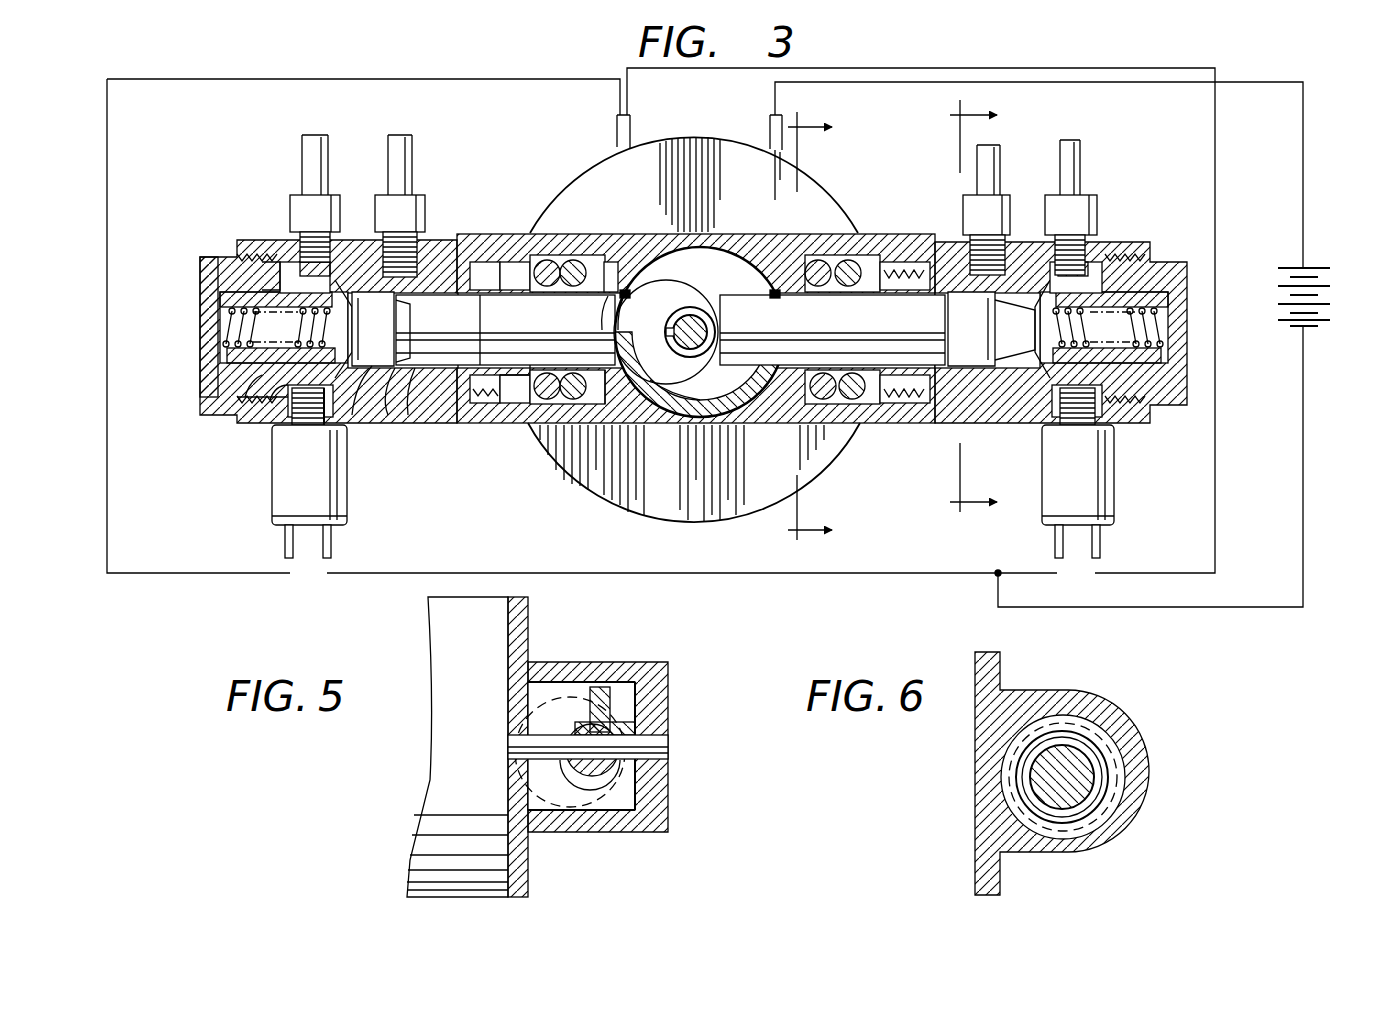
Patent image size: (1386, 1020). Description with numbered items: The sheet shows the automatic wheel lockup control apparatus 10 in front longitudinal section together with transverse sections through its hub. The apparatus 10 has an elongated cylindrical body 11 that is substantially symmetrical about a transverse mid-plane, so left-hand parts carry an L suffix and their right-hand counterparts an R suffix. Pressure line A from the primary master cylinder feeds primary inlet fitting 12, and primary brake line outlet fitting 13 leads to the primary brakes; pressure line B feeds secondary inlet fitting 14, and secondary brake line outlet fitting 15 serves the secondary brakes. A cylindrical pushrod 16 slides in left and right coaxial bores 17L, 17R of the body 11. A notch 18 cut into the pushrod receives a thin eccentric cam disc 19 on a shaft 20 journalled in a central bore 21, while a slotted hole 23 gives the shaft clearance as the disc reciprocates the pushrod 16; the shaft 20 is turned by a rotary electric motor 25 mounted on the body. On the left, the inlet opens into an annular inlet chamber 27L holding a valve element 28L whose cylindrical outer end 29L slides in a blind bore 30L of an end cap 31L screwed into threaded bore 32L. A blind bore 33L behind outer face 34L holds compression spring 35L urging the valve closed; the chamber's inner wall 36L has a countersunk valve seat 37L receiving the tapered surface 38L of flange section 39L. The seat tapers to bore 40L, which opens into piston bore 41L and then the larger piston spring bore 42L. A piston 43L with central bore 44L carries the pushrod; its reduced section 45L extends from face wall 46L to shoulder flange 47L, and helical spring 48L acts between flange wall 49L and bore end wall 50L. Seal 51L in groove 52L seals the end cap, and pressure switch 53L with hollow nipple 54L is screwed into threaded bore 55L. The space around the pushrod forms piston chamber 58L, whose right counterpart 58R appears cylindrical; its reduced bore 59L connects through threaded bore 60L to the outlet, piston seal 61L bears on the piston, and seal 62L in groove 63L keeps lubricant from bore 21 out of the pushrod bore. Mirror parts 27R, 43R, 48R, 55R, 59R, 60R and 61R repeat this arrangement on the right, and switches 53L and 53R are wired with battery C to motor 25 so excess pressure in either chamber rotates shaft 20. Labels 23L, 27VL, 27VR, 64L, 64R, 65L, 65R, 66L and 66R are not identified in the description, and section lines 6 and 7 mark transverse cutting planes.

In FIG. 3, the electrical circuit 10 is at (1214, 66).
In FIG. 3, the battery C is at (1333, 300).
In FIG. 3, the valve body 11 is at (866, 232).
In FIG. 5, the valve body 11 is at (676, 720).
In FIG. 6, the valve body 11 is at (1090, 693).
In FIG. 3, the left inlet solenoid valve 12 is at (316, 193).
In FIG. 3, the left second solenoid valve 13 is at (396, 206).
In FIG. 3, the right inlet solenoid valve 14 is at (1087, 205).
In FIG. 3, the right second solenoid valve 15 is at (976, 193).
In FIG. 3, the shaft 16 is at (772, 292).
In FIG. 5, the shaft 16 is at (573, 735).
In FIG. 6, the shaft 16 is at (1090, 760).
In FIG. 3, the left hub bore 17L is at (624, 292).
In FIG. 3, the right hub bore 17R is at (792, 272).
In FIG. 3, the hub lower wall 18 is at (738, 416).
In FIG. 3, the key 19 is at (645, 412).
In FIG. 5, the key 19 is at (608, 700).
In FIG. 3, the ball 20 is at (694, 320).
In FIG. 5, the ball 20 is at (590, 777).
In FIG. 3, the hub 21 is at (700, 318).
In FIG. 5, the hub 21 is at (665, 782).
In FIG. 5, the shaft pin 23 is at (592, 762).
In FIG. 3, the shaft pin 23L is at (676, 324).
In FIG. 3, the disc 25 is at (833, 455).
In FIG. 3, the left valve cavity 27L is at (280, 245).
In FIG. 3, the right valve cavity 27R is at (1085, 223).
In FIG. 3, the left valve assembly 27VL is at (293, 307).
In FIG. 3, the right valve assembly 27VR is at (1049, 308).
In FIG. 3, the passage 28L is at (392, 416).
In FIG. 3, the end wall 29L is at (236, 413).
In FIG. 3, the left housing 30L is at (235, 405).
In FIG. 3, the left end cap 31L is at (198, 393).
In FIG. 3, the passage 32L is at (256, 410).
In FIG. 3, the spring chamber 33L is at (265, 322).
In FIG. 3, the spring 34L is at (210, 348).
In FIG. 3, the spring 35L is at (238, 317).
In FIG. 3, the inlet passage 36L is at (383, 240).
In FIG. 3, the inlet passage 37L is at (345, 240).
In FIG. 3, the passage 38L is at (358, 416).
In FIG. 3, the passage 39L is at (276, 416).
In FIG. 3, the passage 40L is at (414, 416).
In FIG. 3, the spacer 41L is at (497, 403).
In FIG. 3, the spacer lip 42L is at (512, 400).
In FIG. 3, the gland 43L is at (520, 262).
In FIG. 6, the gland 43R is at (1105, 778).
In FIG. 3, the gland spacer 44L is at (488, 262).
In FIG. 3, the seal housing 45L is at (588, 262).
In FIG. 3, the seal housing 46L is at (582, 368).
In FIG. 3, the seal ring 47L is at (541, 404).
In FIG. 3, the seal ring 48L is at (568, 404).
In FIG. 3, the seal ring 48R is at (855, 405).
In FIG. 6, the seal ring 48R is at (1140, 800).
In FIG. 3, the seal rings 49L is at (550, 260).
In FIG. 3, the retainer 50L is at (606, 420).
In FIG. 3, the valve seat 51L is at (266, 284).
In FIG. 3, the thread 52L is at (262, 288).
In FIG. 3, the left solenoid 53L is at (272, 506).
In FIG. 3, the right solenoid 53R is at (1116, 481).
In FIG. 3, the solenoid stud 54L is at (300, 424).
In FIG. 3, the stud thread 55L is at (326, 425).
In FIG. 3, the stud thread 55R is at (1097, 418).
In FIG. 3, the spool end 58L is at (452, 352).
In FIG. 3, the spool end 58R is at (925, 404).
In FIG. 3, the wave spring 59L is at (480, 403).
In FIG. 3, the wave spring 59R is at (905, 262).
In FIG. 3, the valve stem tip 60L is at (308, 272).
In FIG. 3, the valve stem tip 60R is at (1058, 250).
In FIG. 3, the spool land 61L is at (488, 294).
In FIG. 3, the spool land 61R is at (975, 422).
In FIG. 3, the spool shoulder 62L is at (614, 300).
In FIG. 3, the retainer ring 63L is at (608, 278).
In FIG. 3, the key 64L is at (628, 290).
In FIG. 3, the key 64R is at (770, 292).
In FIG. 3, the left spool rod 65L is at (505, 329).
In FIG. 3, the right spool rod 65R is at (935, 318).
In FIG. 3, the left plunger 66L is at (394, 318).
In FIG. 3, the right plunger 66R is at (985, 405).
In FIG. 3, the inlet pipe A is at (302, 152).
In FIG. 3, the inlet pipe B is at (1080, 162).
In FIG. 3, the section line 6 is at (820, 328).
In FIG. 3, the section line 7 is at (983, 307).